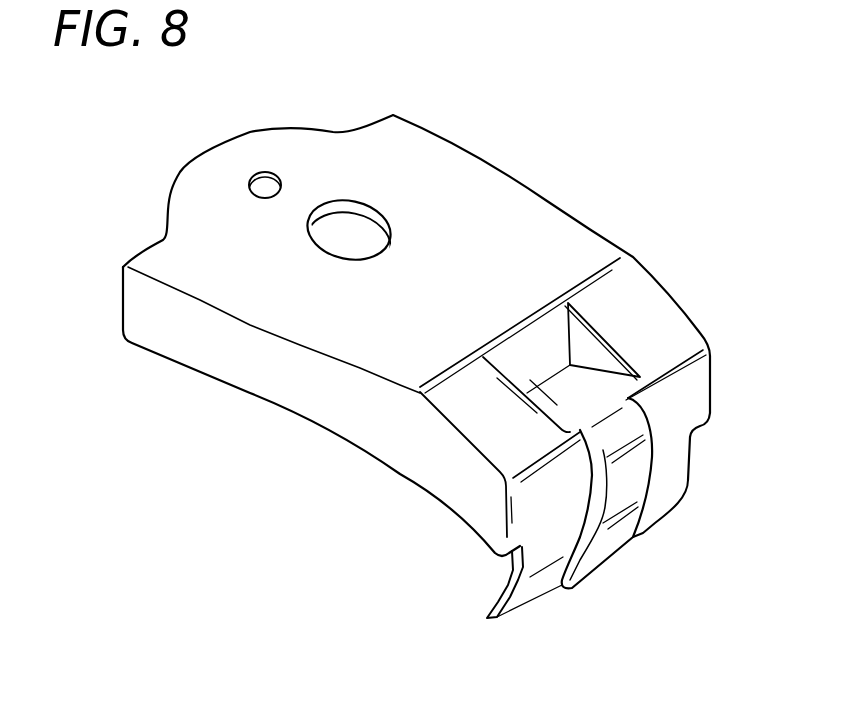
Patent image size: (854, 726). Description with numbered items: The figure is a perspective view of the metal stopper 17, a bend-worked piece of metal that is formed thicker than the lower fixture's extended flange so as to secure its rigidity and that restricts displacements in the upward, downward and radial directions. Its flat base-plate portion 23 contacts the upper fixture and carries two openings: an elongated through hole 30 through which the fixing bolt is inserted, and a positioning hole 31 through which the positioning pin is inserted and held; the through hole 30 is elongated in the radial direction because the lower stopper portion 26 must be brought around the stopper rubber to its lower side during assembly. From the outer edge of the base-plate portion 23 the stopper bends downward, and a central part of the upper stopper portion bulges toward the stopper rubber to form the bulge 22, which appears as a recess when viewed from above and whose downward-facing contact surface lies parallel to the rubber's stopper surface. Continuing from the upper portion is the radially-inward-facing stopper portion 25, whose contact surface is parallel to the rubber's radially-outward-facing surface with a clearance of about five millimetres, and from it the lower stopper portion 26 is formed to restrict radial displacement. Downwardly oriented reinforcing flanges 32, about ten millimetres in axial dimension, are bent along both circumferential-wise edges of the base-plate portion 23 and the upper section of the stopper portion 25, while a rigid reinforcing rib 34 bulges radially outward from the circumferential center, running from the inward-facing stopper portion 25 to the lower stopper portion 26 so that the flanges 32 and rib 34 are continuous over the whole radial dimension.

The metal stopper 17 is at (416, 303).
The bulge 22 is at (583, 350).
The flat base-plate portion 23 is at (522, 230).
The radially-inward-facing stopper portion 25 is at (667, 443).
The lower stopper portion 26 is at (536, 580).
The elongated through hole 30 is at (355, 222).
The positioning hole 31 is at (265, 185).
The reinforcing flanges 32 is at (205, 348).
The reinforcing rib 34 is at (635, 477).